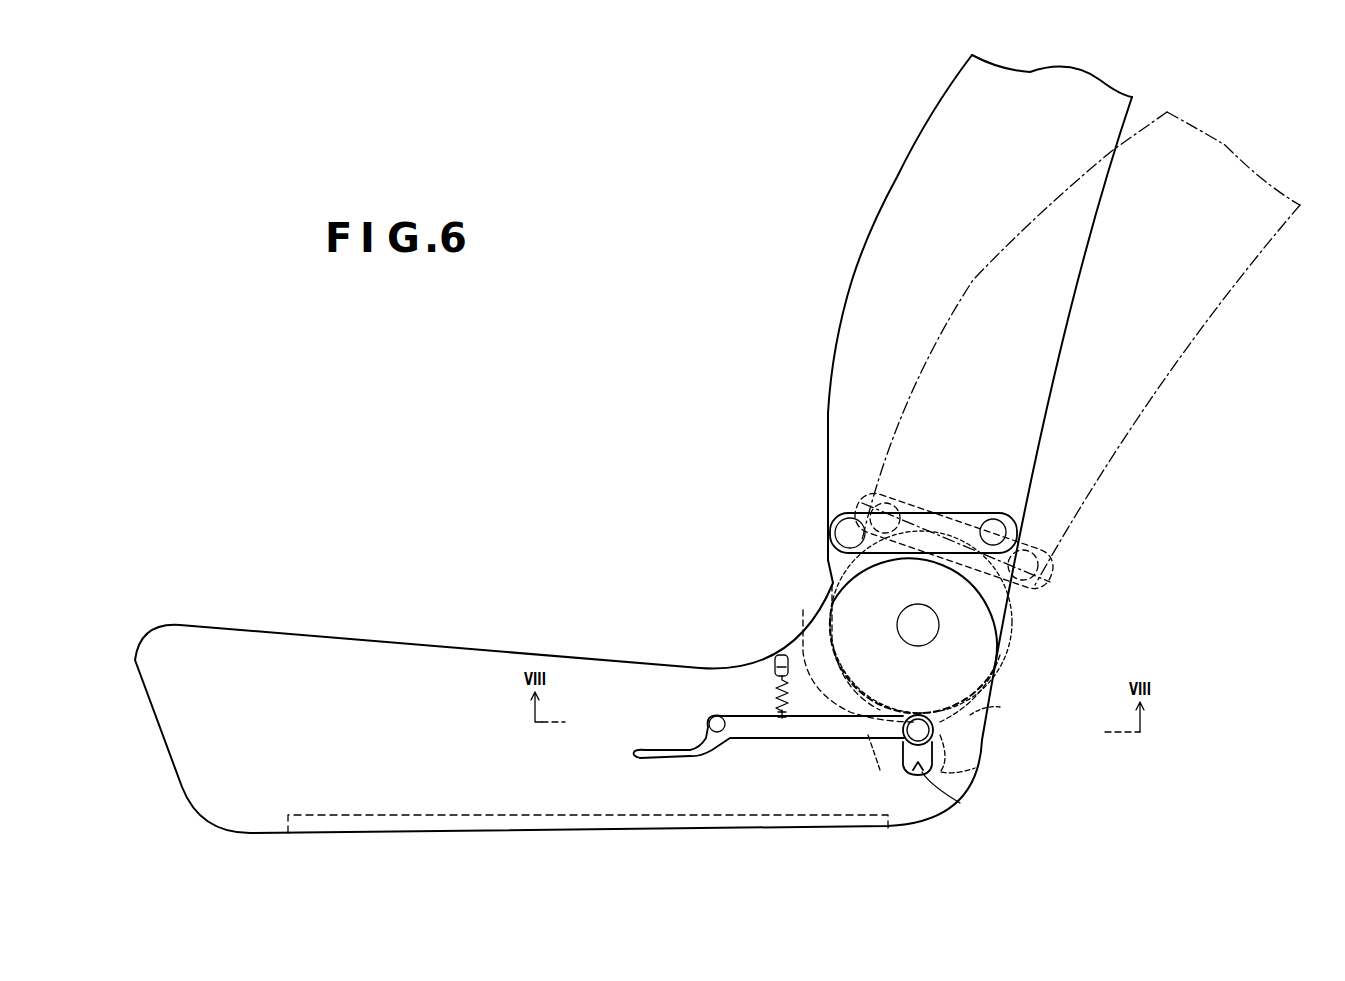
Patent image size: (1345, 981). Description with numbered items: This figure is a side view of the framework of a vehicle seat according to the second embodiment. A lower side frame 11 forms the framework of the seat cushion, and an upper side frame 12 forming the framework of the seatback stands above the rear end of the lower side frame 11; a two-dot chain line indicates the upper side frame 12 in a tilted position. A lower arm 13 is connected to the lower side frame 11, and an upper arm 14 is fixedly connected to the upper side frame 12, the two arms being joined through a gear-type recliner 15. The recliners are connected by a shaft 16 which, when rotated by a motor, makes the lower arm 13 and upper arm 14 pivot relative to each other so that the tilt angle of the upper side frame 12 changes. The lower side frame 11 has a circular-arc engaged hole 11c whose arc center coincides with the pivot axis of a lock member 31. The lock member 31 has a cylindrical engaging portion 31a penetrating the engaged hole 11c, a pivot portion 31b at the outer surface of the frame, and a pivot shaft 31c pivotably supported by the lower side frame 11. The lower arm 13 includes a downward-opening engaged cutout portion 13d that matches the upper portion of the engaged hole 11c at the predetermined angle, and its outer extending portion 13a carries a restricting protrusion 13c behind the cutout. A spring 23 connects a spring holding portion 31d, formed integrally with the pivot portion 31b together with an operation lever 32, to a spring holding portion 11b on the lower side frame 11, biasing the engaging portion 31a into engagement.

The lower side frame 11 is at (447, 660).
The spring holding portion 11b is at (779, 655).
The engaged hole 11c is at (958, 802).
The upper side frame 12 is at (905, 181).
The lower arm 13 is at (894, 653).
The outer extending portion 13a is at (891, 767).
The restricting protrusion 13c is at (978, 768).
The engaged cutout portion 13d is at (992, 706).
The upper arm 14 is at (968, 514).
The recliner 15 is at (1030, 598).
The shaft 16 is at (915, 620).
The spring 23 is at (782, 690).
The lock member 31 is at (835, 740).
The engaging portion 31a is at (925, 730).
The pivot portion 31b is at (800, 740).
The pivot shaft 31c is at (717, 735).
The spring holding portion 31d is at (778, 713).
The operation lever 32 is at (656, 762).